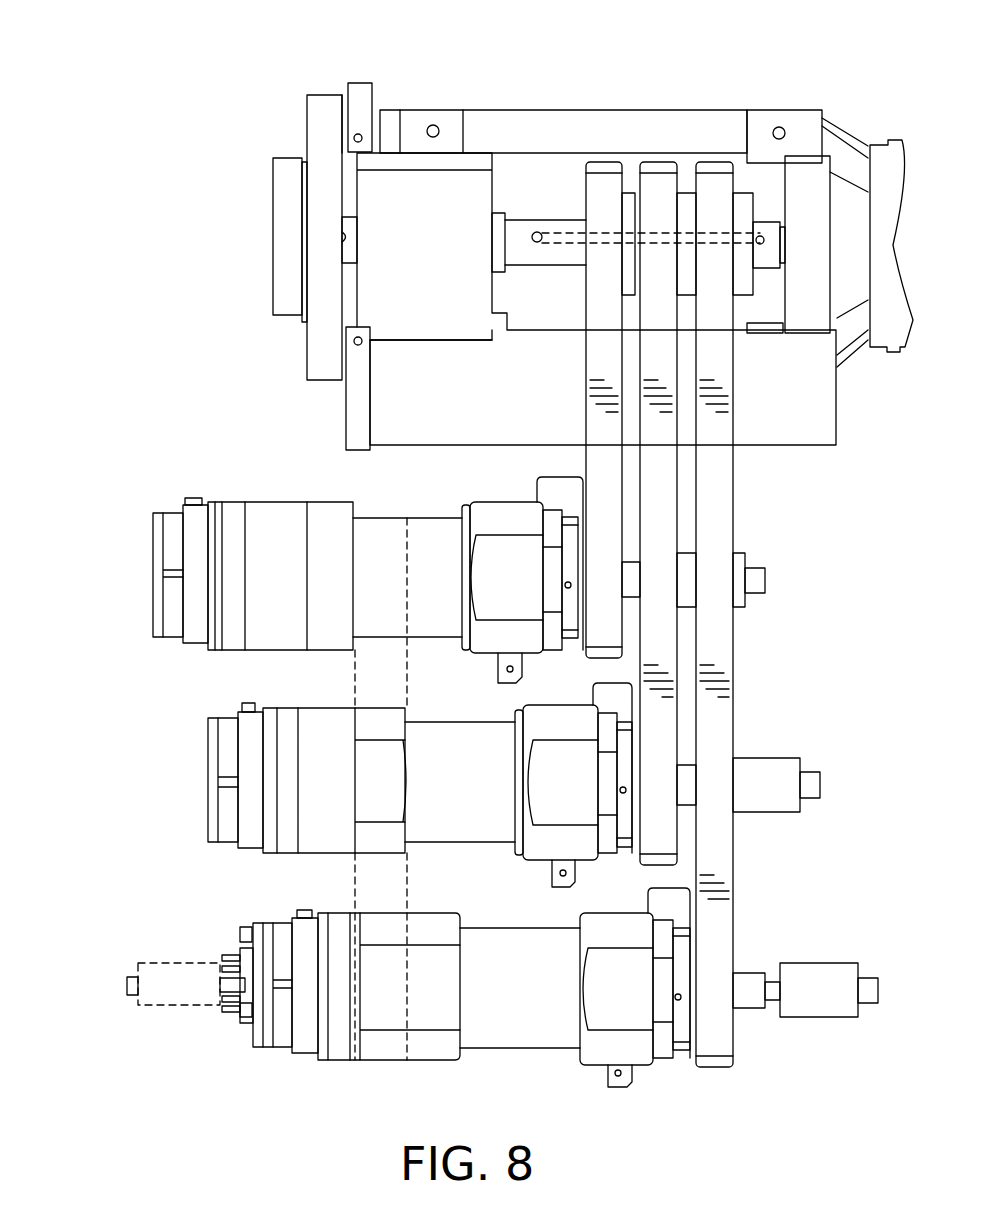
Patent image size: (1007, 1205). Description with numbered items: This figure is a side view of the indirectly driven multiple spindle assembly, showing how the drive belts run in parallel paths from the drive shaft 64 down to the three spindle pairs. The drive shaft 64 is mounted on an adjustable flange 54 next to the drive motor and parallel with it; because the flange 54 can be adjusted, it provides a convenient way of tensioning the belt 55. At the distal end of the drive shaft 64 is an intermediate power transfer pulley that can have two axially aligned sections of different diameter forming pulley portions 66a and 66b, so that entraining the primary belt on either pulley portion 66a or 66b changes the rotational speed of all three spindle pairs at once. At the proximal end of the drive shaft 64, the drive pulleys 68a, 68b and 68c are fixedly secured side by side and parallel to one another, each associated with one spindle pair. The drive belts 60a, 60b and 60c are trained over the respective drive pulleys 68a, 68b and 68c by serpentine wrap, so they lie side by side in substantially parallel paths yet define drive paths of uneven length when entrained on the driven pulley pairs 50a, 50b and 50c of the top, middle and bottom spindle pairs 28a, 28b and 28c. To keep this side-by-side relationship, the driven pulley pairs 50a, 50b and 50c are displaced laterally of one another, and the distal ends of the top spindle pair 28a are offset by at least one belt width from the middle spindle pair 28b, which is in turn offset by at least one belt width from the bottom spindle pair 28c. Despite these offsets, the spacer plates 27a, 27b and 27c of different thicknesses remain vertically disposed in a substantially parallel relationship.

The spacer plate 27a is at (272, 528).
The spacer plate 27b is at (325, 720).
The spacer plate 27c is at (340, 938).
The top spindle pair 28a is at (297, 561).
The middle spindle pair 28b is at (330, 773).
The bottom spindle pair 28c is at (369, 977).
The driven pulley pair 50a is at (627, 623).
The driven pulley pair 50b is at (695, 823).
The driven pulley pair 50c is at (758, 935).
The adjustable flange 54 is at (362, 92).
The belt 55 is at (322, 120).
The drive belt 60a is at (603, 430).
The drive belt 60b is at (660, 477).
The drive belt 60c is at (715, 508).
The drive shaft 64 is at (540, 225).
The pulley portion 66a is at (290, 240).
The pulley portion 66b is at (303, 352).
The drive pulley 68a is at (598, 175).
The drive pulley 68b is at (640, 175).
The drive pulley 68c is at (690, 175).